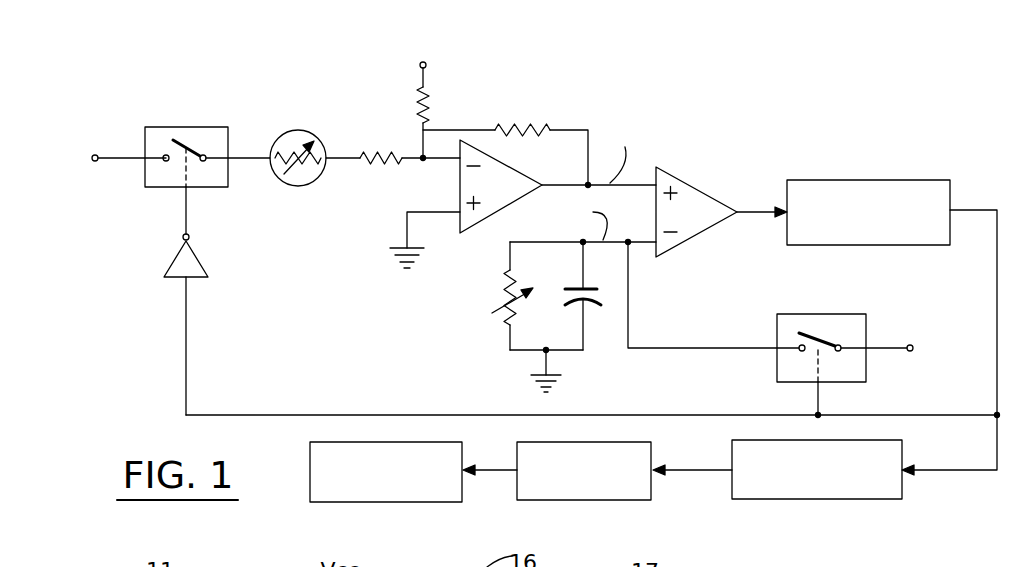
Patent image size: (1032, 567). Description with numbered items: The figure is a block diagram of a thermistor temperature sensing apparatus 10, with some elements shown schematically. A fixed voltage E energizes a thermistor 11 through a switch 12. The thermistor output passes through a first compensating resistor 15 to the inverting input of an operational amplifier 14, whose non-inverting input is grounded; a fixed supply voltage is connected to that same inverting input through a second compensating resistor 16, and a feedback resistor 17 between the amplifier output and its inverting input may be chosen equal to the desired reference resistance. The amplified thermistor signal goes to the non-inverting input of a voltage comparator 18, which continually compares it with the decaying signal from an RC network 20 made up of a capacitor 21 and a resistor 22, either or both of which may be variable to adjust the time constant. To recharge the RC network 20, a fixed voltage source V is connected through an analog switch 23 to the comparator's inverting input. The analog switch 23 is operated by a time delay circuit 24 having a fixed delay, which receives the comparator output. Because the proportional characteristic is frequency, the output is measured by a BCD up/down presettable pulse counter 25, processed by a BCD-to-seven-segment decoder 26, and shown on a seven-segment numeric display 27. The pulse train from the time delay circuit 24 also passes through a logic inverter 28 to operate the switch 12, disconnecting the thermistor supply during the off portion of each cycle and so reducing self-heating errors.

The thermistor temperature sensing apparatus 10 is at (544, 295).
The thermistor 11 is at (280, 132).
The switch 12 is at (207, 127).
The operational amplifier 14 is at (512, 168).
The first compensating resistor 15 is at (373, 163).
The second compensating resistor 16 is at (433, 102).
The resistor 17 is at (527, 127).
The voltage comparator 18 is at (688, 182).
The RC network 20 is at (503, 317).
The capacitor 21 is at (575, 287).
The resistor 22 is at (502, 287).
The analog switch 23 is at (830, 314).
The time delay circuit 24 is at (787, 230).
The pulse counter 25 is at (892, 500).
The decoder 26 is at (651, 500).
The numeric display 27 is at (462, 500).
The logic inverter 28 is at (198, 260).